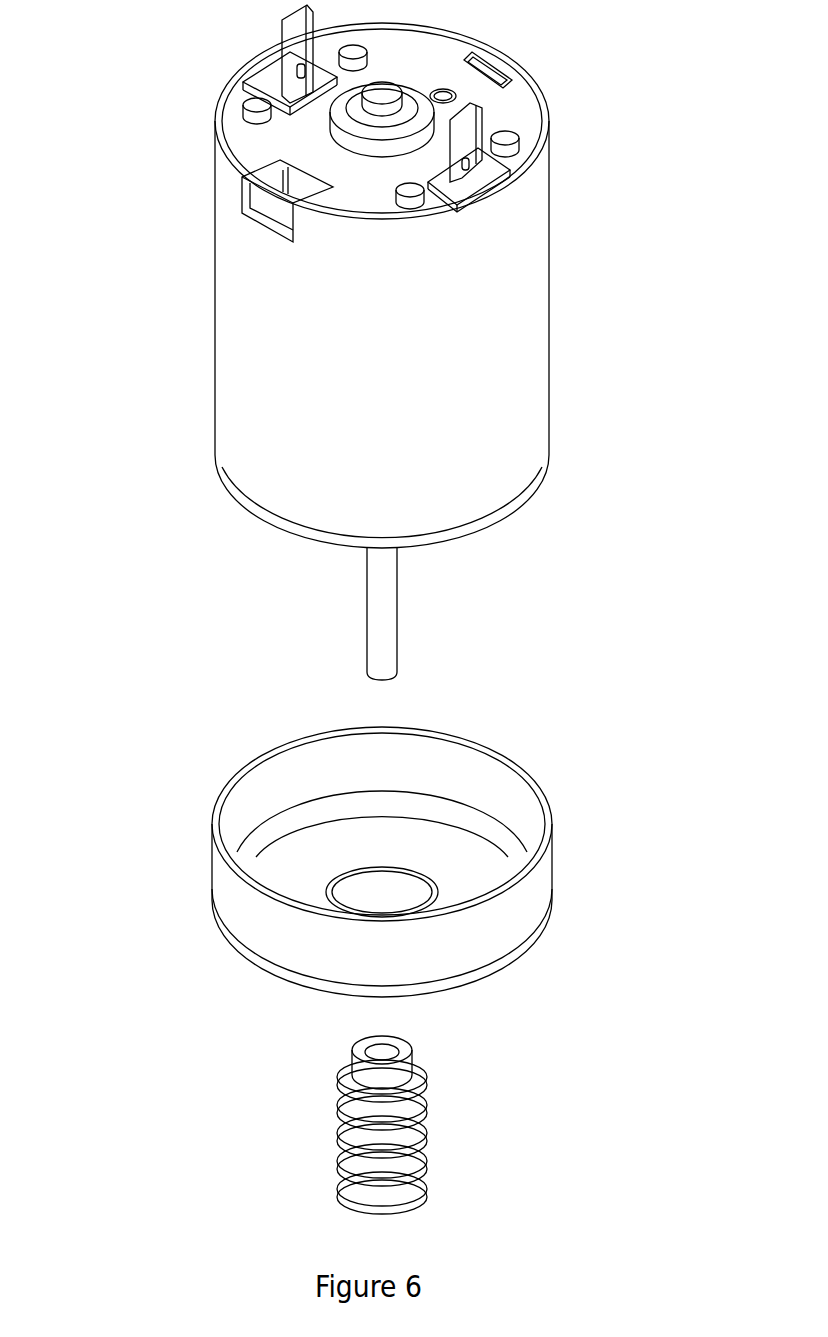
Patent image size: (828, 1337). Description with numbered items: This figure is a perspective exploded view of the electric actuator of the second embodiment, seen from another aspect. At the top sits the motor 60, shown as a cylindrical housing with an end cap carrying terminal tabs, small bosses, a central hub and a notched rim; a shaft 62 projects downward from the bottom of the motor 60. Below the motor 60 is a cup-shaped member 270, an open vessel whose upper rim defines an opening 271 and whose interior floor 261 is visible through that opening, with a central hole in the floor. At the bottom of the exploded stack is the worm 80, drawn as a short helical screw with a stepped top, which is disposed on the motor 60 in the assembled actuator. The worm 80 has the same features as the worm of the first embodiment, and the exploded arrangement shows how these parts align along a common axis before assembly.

The motor 60 is at (158, 274).
The motor shaft 62 is at (388, 597).
The cup-shaped housing 270 is at (449, 853).
The rim opening of housing 271 is at (417, 758).
The inner bottom of housing 261 is at (452, 852).
The worm 80 is at (428, 1140).